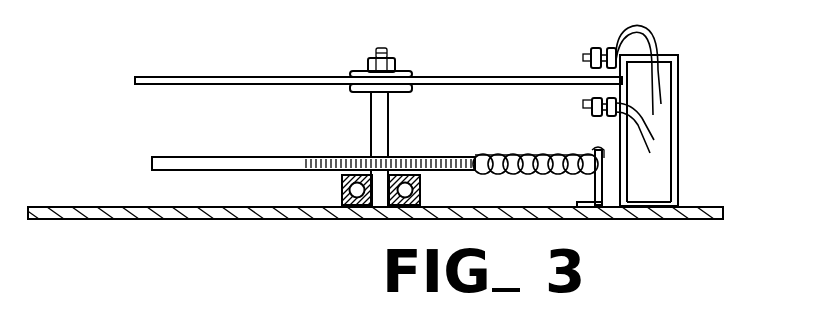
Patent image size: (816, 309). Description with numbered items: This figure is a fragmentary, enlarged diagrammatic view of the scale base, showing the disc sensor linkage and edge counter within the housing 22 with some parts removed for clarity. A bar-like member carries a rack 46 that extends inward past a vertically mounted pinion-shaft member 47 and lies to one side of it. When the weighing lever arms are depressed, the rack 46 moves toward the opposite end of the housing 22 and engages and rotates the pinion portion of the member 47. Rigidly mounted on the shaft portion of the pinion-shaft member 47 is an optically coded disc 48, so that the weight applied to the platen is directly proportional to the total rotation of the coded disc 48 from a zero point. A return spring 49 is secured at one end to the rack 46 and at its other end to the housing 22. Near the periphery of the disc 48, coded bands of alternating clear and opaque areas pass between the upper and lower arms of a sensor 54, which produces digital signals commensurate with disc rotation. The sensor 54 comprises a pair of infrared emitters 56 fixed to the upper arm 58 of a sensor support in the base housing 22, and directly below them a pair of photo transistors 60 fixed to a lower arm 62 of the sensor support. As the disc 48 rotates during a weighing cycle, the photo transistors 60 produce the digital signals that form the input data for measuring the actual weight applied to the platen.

The housing 22 is at (100, 206).
The rack 46 is at (212, 157).
The pinion-shaft member 47 is at (385, 137).
The optically coded disc 48 is at (170, 77).
The return spring 49 is at (542, 172).
The sensor 54 is at (656, 44).
The infrared emitters 56 is at (588, 68).
The upper arm 58 is at (652, 55).
The photo transistors 60 is at (583, 98).
The lower arm 62 is at (627, 163).